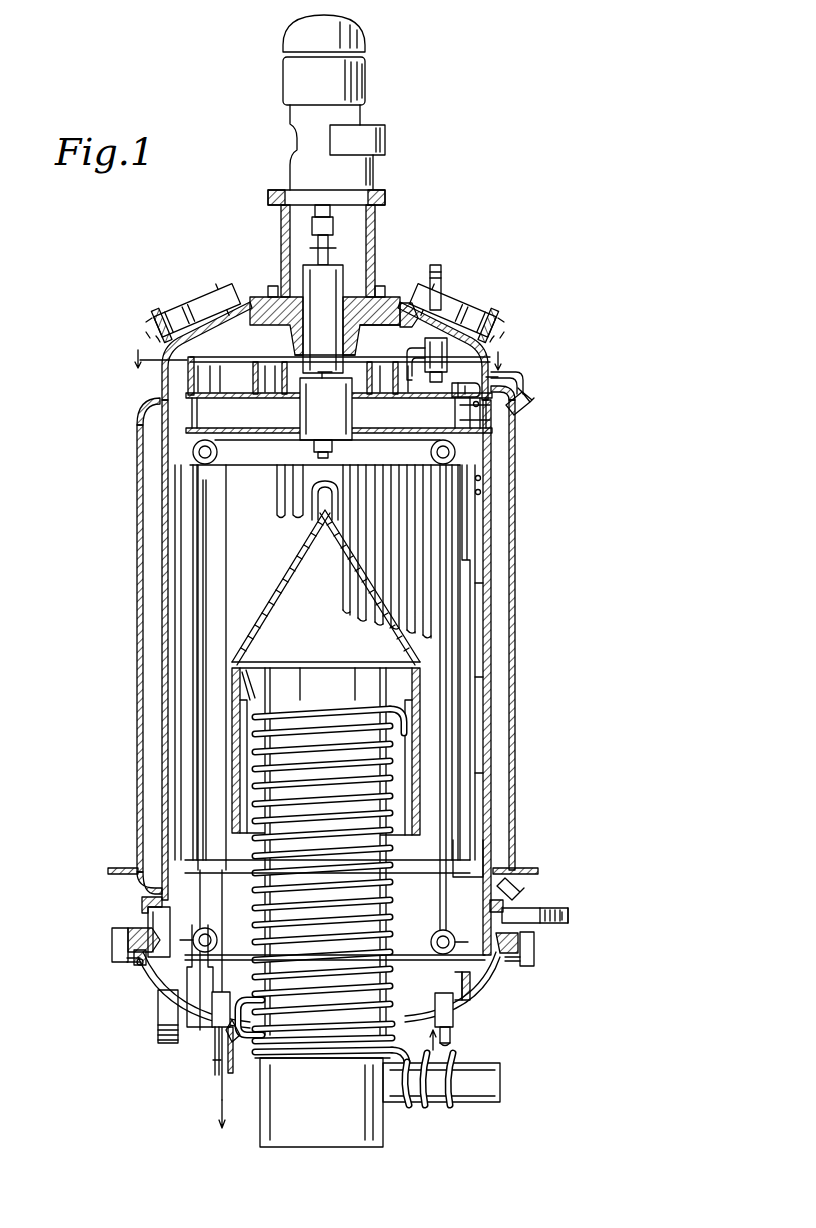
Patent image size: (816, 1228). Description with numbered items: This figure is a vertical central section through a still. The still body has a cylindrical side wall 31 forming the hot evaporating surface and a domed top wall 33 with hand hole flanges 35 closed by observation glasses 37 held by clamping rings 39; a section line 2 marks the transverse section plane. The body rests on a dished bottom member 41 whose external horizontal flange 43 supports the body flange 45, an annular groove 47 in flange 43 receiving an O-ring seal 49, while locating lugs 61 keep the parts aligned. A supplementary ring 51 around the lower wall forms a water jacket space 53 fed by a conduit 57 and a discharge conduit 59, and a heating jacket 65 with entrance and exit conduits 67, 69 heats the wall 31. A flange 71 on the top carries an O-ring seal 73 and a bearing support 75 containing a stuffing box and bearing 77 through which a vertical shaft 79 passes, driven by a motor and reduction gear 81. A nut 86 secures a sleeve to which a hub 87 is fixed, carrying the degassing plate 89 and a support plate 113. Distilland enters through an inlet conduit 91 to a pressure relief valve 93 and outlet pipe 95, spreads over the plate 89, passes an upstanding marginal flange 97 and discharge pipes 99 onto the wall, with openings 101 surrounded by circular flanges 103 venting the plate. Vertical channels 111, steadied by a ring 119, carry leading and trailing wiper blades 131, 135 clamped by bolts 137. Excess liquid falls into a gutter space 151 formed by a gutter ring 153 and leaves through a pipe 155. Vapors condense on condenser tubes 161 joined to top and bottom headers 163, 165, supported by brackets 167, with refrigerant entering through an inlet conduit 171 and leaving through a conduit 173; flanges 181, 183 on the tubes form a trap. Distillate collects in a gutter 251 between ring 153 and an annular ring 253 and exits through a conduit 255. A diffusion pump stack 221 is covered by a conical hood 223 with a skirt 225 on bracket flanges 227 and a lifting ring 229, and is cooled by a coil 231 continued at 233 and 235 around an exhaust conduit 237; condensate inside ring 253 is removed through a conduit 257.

The section line 2- 2 is at (310, 361).
The cylindrical side wall 31 is at (492, 507).
The domed top wall 33 is at (412, 312).
The hand hole flanges 35 is at (160, 342).
The observation glasses 37 is at (196, 320).
The clamping rings 39 is at (152, 322).
The dished bottom member 41 is at (470, 998).
The external horizontal flange 43 is at (127, 960).
The horizontal flange 45 is at (130, 930).
The annular groove 47 is at (135, 965).
The O-ring seal 49 is at (140, 970).
The supplementary band or ring 51 is at (143, 903).
The water jacket space 53 is at (160, 925).
The conduit 57 is at (530, 914).
The discharge conduit 59 is at (570, 912).
The locating lugs 61 is at (112, 940).
The heating jacket 65 is at (515, 586).
The entrance conduit 67 is at (528, 886).
The exit conduit 69 is at (522, 404).
The flange 71 is at (347, 340).
The O-ring seal 73 is at (311, 279).
The bearing support 75 is at (270, 308).
The pressure-seal stuffing box and bearing 77 is at (338, 283).
The vertical shaft 79 is at (318, 258).
The driving motor and reduction gear 81 is at (366, 78).
The nut 86 is at (314, 447).
The hub 87 is at (352, 414).
The degassing plate 89 is at (448, 402).
The distilland inlet conduit 91 is at (441, 278).
The pressure relief valve 93 is at (440, 352).
The outlet pipe 95 is at (424, 370).
The upstanding marginal flange 97 is at (190, 375).
The discharge pipes or nozzles 99 is at (478, 384).
The openings 101 is at (270, 398).
The upstanding circular flange 103 is at (252, 368).
The vertical channels 111 is at (470, 698).
The support plate 113 is at (240, 412).
The ring 119 is at (468, 878).
The leading wiper blade 131 is at (485, 730).
The trailing wiper blade 135 is at (175, 522).
The clamping bolts 137 is at (482, 479).
The gutter space 151 is at (480, 980).
The gutter flange or ring 153 is at (470, 996).
The pipe 155 is at (158, 1032).
The condenser tubes 161 is at (290, 500).
The top header 163 is at (456, 453).
The bottom header 165 is at (418, 934).
The supporting brackets 167 is at (200, 1000).
The inlet conduit 171 is at (452, 1035).
The conduit 173 is at (226, 586).
The radial flange 181 is at (207, 548).
The second flange 183 is at (440, 658).
The diffusion pump casing or stack 221 is at (349, 690).
The conical hood 223 is at (290, 583).
The cylindrical skirt 225 is at (232, 745).
The bracket flanges 227 is at (262, 668).
The lifting ring 229 is at (313, 520).
The cooling coil 231 is at (342, 995).
The cooling coil continuation 233 is at (333, 1058).
The cooling coil continuation 235 is at (434, 1103).
The exhaust conduit 237 is at (490, 1097).
The gutter 251 is at (226, 990).
The annular ring 253 is at (255, 1010).
The conduit 255 is at (214, 1052).
The conduit 257 is at (245, 1060).